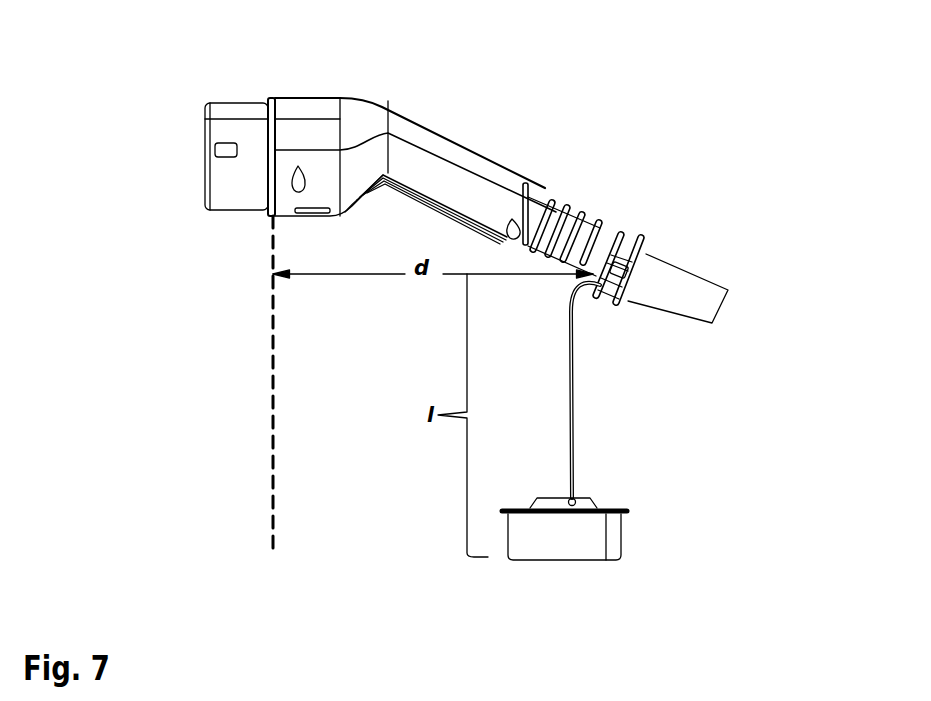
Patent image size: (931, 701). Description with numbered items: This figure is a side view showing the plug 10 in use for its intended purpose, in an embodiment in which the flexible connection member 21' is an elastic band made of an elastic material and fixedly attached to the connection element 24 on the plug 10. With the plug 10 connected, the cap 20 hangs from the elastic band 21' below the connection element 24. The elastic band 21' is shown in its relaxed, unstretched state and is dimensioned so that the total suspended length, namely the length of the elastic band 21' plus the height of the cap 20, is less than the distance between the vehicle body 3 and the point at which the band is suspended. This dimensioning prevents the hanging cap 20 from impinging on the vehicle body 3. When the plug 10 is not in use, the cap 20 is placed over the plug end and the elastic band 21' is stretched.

The plug 10 is at (490, 131).
The connection element 24 is at (643, 240).
The flexible connection member 21' is at (642, 390).
The cap 20 is at (645, 567).
The vehicle body 3 is at (268, 375).